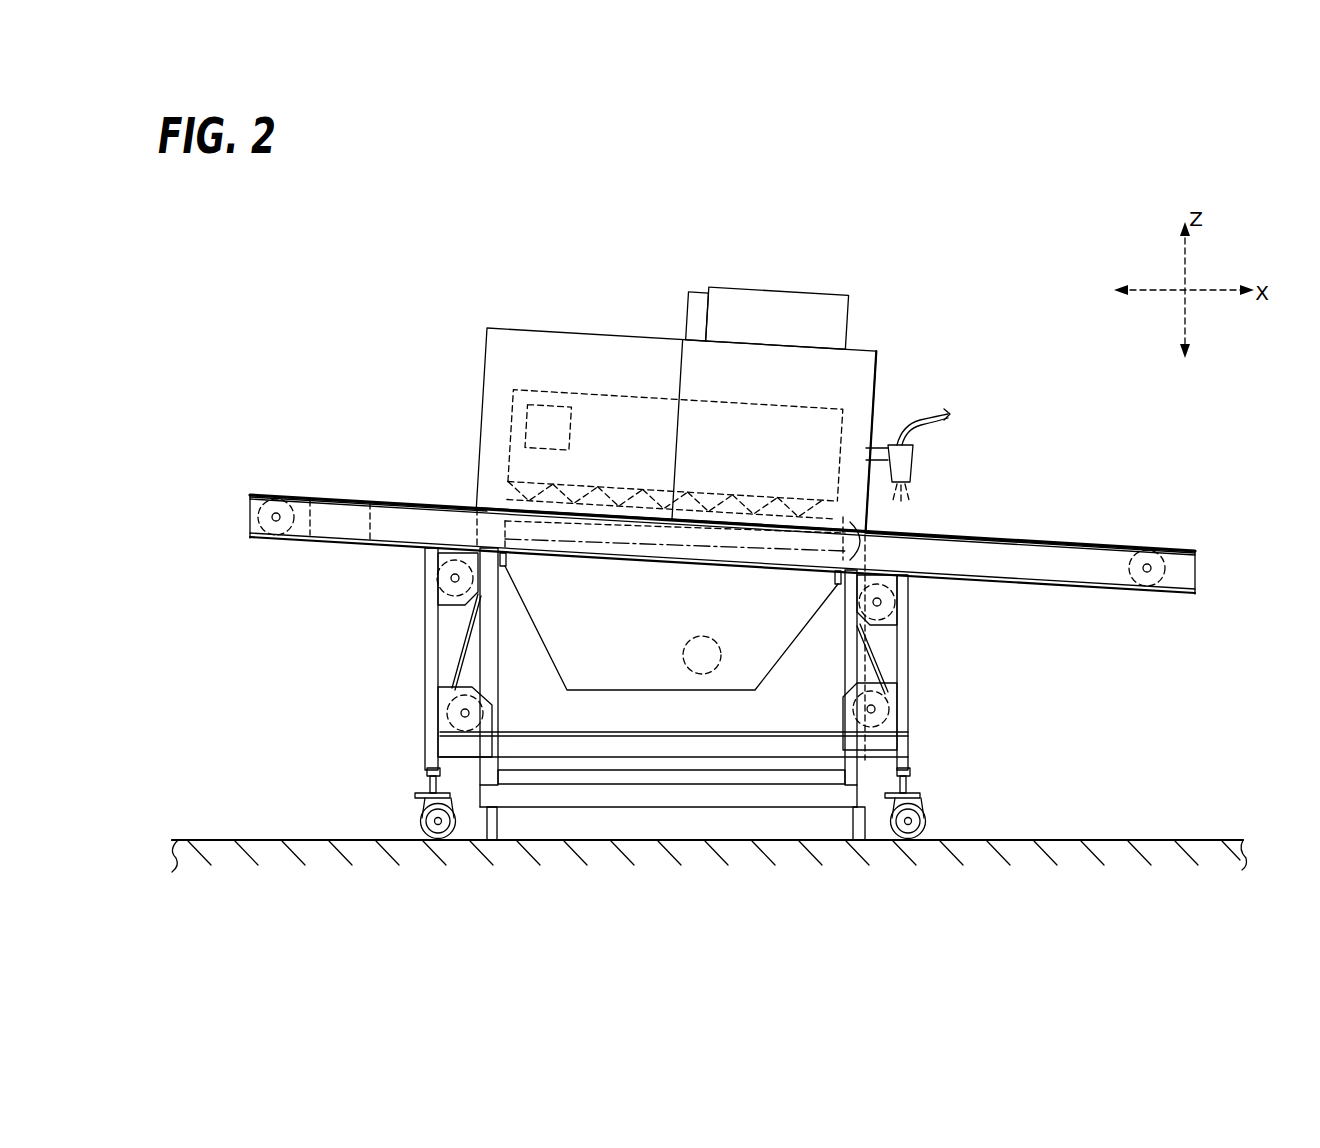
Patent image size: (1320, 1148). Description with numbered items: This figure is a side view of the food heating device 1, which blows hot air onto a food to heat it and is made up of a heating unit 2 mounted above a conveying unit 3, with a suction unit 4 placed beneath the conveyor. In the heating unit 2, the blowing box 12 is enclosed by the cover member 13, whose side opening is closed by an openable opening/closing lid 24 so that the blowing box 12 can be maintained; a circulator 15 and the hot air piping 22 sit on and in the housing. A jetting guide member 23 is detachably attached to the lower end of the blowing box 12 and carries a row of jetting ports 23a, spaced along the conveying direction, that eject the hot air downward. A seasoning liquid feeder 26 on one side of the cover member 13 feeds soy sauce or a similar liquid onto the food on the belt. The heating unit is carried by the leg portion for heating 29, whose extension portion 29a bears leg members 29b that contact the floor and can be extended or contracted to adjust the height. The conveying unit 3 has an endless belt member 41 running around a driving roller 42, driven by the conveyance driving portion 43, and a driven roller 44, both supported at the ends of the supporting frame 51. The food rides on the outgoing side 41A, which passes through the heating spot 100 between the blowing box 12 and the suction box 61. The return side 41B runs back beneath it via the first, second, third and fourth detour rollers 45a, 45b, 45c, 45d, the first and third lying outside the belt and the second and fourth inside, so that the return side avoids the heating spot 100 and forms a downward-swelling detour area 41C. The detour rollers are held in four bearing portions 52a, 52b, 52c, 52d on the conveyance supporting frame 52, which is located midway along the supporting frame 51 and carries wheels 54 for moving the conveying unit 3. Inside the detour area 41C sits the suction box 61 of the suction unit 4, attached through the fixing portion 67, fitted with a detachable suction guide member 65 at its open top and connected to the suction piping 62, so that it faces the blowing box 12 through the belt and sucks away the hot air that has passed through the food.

The food heating device 1 is at (1012, 174).
The heating unit 2 is at (482, 310).
The conveying unit 3 is at (922, 660).
The suction unit 4 is at (515, 636).
The blowing box 12 is at (675, 445).
The cover member 13 is at (676, 429).
The circulator 15 is at (777, 318).
The hot air piping 22 is at (548, 428).
The jetting guide member 23 is at (672, 501).
The jetting ports 23a is at (671, 509).
The opening/closing lid 24 is at (871, 441).
The seasoning liquid feeder 26 is at (915, 464).
The leg portion for heating 29 is at (854, 676).
The extension portion 29a is at (708, 786).
The leg members 29b is at (852, 823).
The belt member 41 is at (999, 581).
The outgoing side 41A is at (350, 499).
The return side 41B is at (1050, 583).
The detour area 41C is at (688, 736).
The driving roller 42 is at (274, 518).
The conveyance driving portion 43 is at (314, 499).
The driven roller 44 is at (1150, 570).
The first detour roller 45a is at (879, 603).
The second detour roller 45b is at (880, 708).
The third detour roller 45c is at (455, 579).
The fourth detour roller 45d is at (465, 714).
The supporting frame 51 is at (326, 537).
The conveyance supporting frame 52 is at (904, 638).
The bearing portion 52a is at (894, 618).
The bearing portion 52b is at (888, 737).
The bearing portion 52c is at (440, 563).
The bearing portion 52d is at (440, 694).
The wheels 54 is at (929, 808).
The suction box 61 is at (655, 673).
The suction piping 62 is at (697, 316).
The suction guide member 65 is at (593, 527).
The fixing portion 67 is at (499, 558).
The heating spot 100 is at (857, 548).